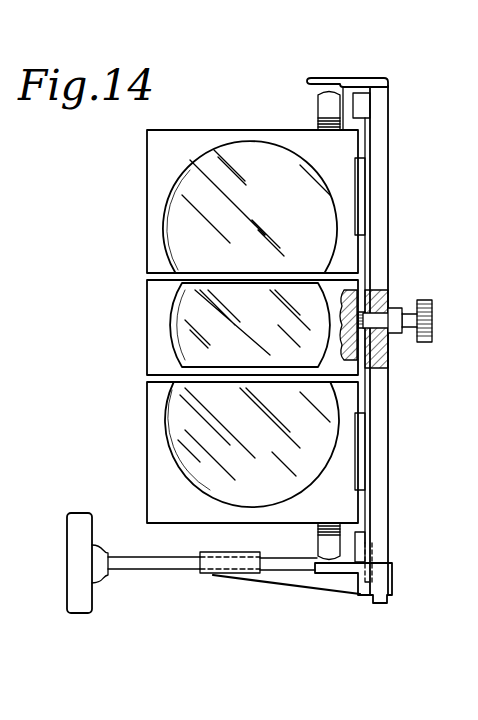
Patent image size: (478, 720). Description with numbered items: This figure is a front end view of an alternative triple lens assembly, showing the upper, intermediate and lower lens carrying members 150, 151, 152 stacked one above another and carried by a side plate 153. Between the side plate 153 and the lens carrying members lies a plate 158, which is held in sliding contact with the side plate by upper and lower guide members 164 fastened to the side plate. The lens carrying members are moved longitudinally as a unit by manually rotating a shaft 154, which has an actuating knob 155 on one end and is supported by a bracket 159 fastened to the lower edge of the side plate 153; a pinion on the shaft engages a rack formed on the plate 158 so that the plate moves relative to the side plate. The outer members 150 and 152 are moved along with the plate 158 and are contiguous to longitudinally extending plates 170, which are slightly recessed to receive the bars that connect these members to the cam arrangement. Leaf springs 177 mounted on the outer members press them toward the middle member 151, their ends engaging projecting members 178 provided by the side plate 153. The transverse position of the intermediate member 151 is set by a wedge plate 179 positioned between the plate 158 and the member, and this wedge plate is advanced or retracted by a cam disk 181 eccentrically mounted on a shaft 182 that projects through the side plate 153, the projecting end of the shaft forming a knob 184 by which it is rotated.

The upper lens carrying member 150 is at (183, 140).
The intermediate lens carrying member 151 is at (150, 348).
The lower lens carrying member 152 is at (150, 462).
The side plate 153 is at (383, 217).
The shaft 154 is at (137, 567).
The actuating knob 155 is at (77, 608).
The plate 158 is at (368, 167).
The bracket 159 is at (307, 580).
The guide members 164 is at (368, 101).
The plates 170 is at (358, 198).
The leaf springs 177 is at (327, 110).
The projecting members 178 is at (345, 83).
The wedge plate 179 is at (362, 355).
The cam disk 181 is at (388, 293).
The shaft 182 is at (395, 318).
The knob 184 is at (448, 300).